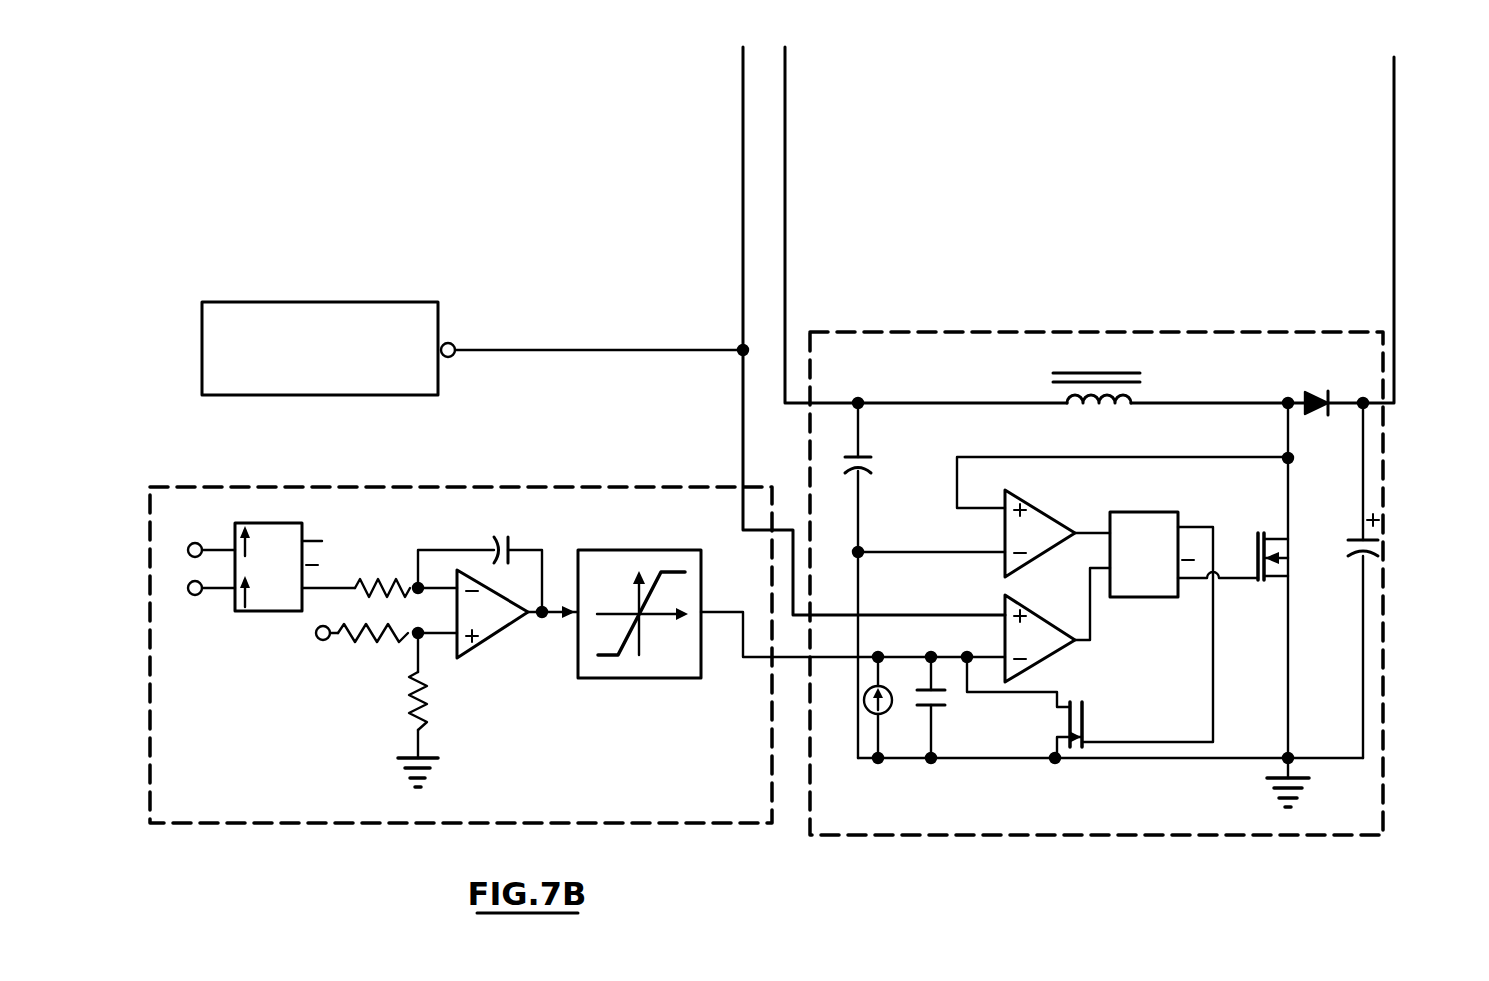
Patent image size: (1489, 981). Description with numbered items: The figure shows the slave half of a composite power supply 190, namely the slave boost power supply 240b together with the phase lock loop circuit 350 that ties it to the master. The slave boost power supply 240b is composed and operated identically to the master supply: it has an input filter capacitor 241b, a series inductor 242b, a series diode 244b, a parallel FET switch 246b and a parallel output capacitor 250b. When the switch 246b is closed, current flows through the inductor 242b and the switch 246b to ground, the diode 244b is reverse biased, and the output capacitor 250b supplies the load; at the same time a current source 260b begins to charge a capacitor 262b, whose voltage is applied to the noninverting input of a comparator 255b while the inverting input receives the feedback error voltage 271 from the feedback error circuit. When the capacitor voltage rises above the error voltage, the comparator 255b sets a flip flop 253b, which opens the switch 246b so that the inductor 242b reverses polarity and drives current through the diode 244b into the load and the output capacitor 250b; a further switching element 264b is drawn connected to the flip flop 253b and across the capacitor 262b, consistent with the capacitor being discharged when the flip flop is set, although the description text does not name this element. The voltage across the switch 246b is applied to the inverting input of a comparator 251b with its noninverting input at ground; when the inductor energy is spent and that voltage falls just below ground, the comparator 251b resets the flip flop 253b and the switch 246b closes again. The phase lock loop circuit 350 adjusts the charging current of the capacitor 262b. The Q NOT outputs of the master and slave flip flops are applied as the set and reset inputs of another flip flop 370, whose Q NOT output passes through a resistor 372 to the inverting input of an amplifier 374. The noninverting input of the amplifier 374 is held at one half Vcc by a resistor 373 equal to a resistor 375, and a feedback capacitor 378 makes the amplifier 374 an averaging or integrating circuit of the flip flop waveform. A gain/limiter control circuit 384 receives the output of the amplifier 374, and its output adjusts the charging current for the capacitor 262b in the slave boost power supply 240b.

The feedback error voltage 271 is at (355, 302).
The phase lock loop circuit 350 is at (287, 825).
The flip flop 370 is at (252, 554).
The resistor 372 is at (387, 578).
The resistor 373 is at (386, 642).
The amplifier 374 is at (487, 640).
The resistor 375 is at (432, 709).
The feedback capacitor 378 is at (512, 543).
The gain/limiter control circuit 384 is at (645, 550).
The slave boost power supply 240b is at (1383, 678).
The input filter capacitor 241b is at (868, 455).
The series inductor 242b is at (1117, 412).
The series diode 244b is at (1302, 401).
The parallel FET switch 246b is at (1272, 560).
The parallel output capacitor 250b is at (1348, 538).
The comparator 251b is at (1017, 500).
The flip flop 253b is at (1170, 613).
The comparator 255b is at (1058, 655).
The current source 260b is at (893, 703).
The capacitor 262b is at (946, 709).
The switch 264b is at (1085, 712).
The composite power supply 190 is at (1442, 767).